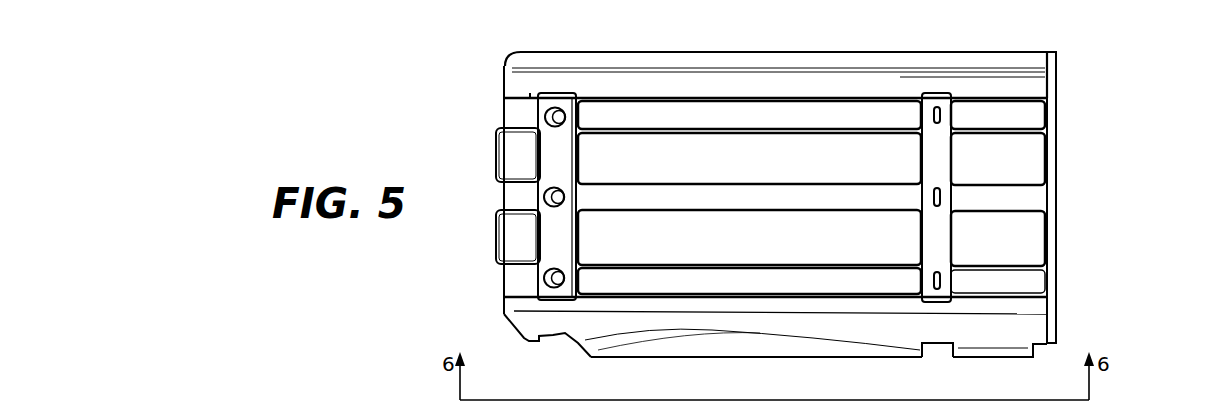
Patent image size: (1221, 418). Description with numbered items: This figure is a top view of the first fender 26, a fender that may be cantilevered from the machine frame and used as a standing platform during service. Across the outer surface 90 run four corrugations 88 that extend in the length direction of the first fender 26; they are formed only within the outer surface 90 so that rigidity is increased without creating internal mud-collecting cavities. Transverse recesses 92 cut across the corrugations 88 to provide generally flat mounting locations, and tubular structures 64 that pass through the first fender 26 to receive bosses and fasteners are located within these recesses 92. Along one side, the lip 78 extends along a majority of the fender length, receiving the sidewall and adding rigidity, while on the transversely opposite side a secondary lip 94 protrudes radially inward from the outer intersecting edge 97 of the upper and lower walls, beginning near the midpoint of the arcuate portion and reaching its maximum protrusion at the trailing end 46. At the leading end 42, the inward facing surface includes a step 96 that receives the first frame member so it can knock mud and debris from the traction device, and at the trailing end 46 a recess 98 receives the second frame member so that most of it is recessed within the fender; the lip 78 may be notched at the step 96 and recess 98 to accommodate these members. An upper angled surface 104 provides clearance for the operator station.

The first fender 26 is at (1116, 186).
The leading end 42 is at (538, 44).
The trailing end 46 is at (1004, 44).
The tubular structures 64 is at (556, 186).
The lip 78 is at (540, 339).
The corrugations 88 is at (748, 83).
The outer surface 90 is at (660, 118).
The transverse recesses 92 is at (547, 127).
The secondary lip 94 is at (835, 46).
The step 96 is at (568, 344).
The outer intersecting edge 97 is at (605, 50).
The recess 98 is at (936, 351).
The upper angled surface 104 is at (1057, 76).